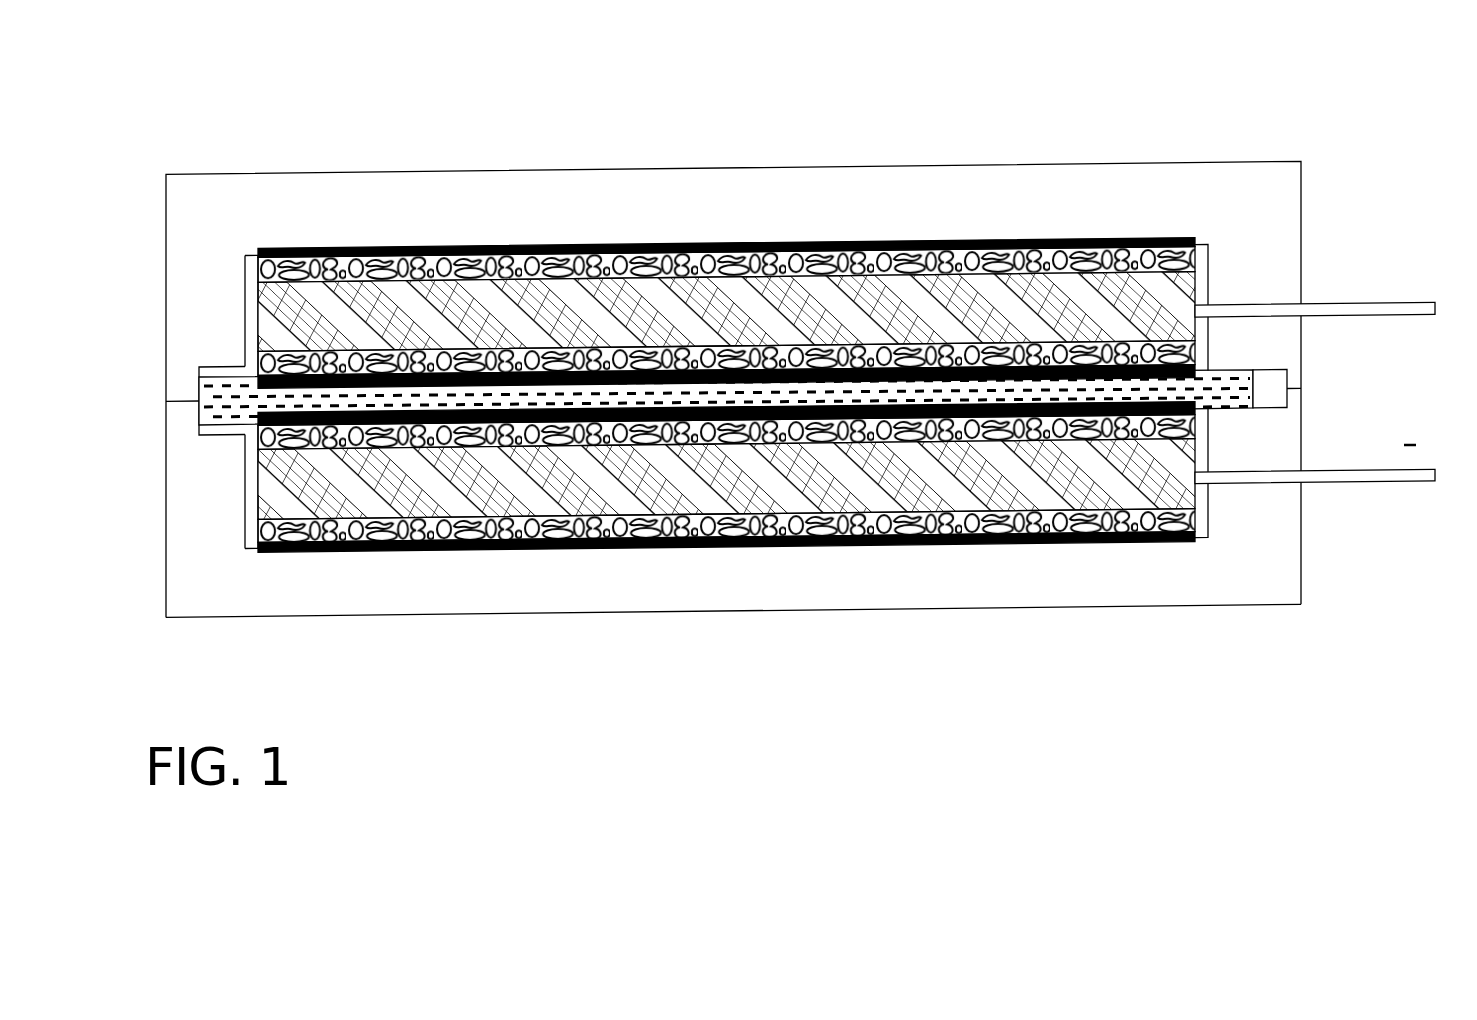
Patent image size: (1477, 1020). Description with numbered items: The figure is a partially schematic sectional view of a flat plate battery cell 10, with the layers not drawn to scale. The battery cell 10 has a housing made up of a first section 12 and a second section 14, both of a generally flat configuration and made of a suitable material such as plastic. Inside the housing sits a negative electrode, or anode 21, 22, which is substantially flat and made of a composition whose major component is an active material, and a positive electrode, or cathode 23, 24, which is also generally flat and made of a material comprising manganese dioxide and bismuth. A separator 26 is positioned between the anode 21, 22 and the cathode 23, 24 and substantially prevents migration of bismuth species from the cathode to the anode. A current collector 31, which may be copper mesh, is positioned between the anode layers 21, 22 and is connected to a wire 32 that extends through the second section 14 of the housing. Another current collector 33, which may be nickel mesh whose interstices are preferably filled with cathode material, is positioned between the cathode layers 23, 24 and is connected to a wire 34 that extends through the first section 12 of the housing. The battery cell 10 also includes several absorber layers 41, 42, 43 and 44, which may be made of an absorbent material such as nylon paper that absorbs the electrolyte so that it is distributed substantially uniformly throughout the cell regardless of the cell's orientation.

The battery cell 10 is at (797, 375).
The first section 12 is at (198, 198).
The second section 14 is at (215, 593).
The anode layer 21 is at (477, 440).
The anode layer 22 is at (596, 522).
The cathode layer 23 is at (643, 245).
The cathode layer 24 is at (803, 347).
The separator 26 is at (1232, 383).
The current collector 31 is at (822, 505).
The wire 32 is at (1397, 483).
The current collector 33 is at (883, 300).
The wire 34 is at (1347, 302).
The absorber layer 41 is at (968, 535).
The absorber layer 42 is at (1136, 435).
The absorber layer 43 is at (1018, 240).
The absorber layer 44 is at (1108, 350).